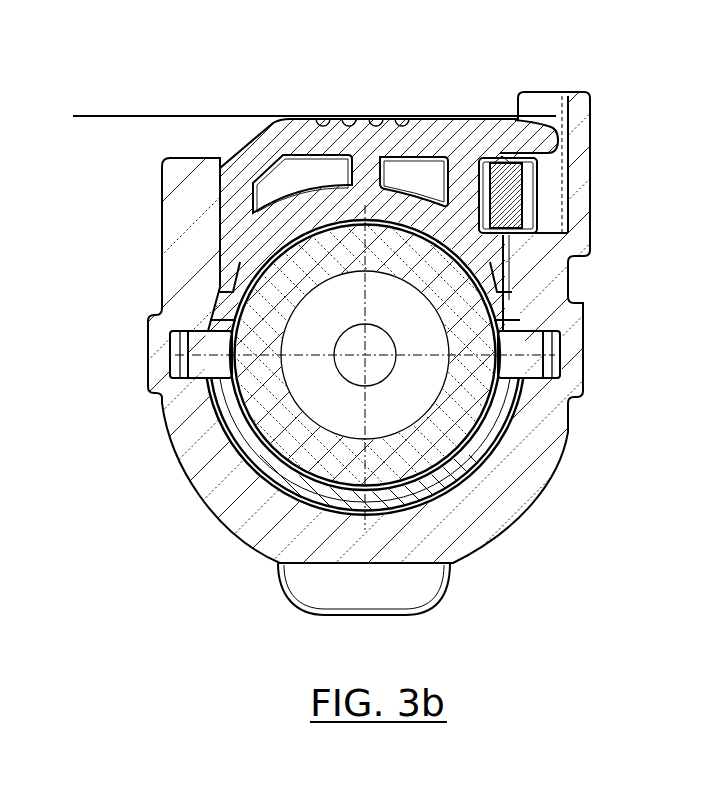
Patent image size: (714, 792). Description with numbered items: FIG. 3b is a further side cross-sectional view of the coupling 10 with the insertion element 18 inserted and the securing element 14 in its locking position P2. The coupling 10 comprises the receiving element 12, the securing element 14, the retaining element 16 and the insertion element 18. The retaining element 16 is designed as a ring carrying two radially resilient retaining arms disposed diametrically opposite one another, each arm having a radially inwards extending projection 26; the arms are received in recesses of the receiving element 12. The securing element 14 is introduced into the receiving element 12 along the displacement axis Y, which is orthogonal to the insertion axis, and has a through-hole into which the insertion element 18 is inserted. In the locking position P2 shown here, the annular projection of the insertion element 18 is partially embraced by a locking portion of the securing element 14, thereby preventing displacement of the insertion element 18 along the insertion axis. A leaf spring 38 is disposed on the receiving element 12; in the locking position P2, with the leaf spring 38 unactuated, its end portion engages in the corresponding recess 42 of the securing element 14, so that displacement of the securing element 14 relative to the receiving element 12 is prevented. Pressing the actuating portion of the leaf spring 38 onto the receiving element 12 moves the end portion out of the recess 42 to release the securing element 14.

The coupling 10 is at (186, 87).
The receiving element 12 is at (190, 450).
The securing element 14 is at (407, 138).
The retaining element 16 is at (275, 473).
The insertion element 18 is at (442, 450).
The projection 26 is at (522, 347).
The leaf spring 38 is at (517, 193).
The recess 42 is at (487, 168).
The locking position P2 is at (295, 119).
The displacement axis Y is at (370, 262).